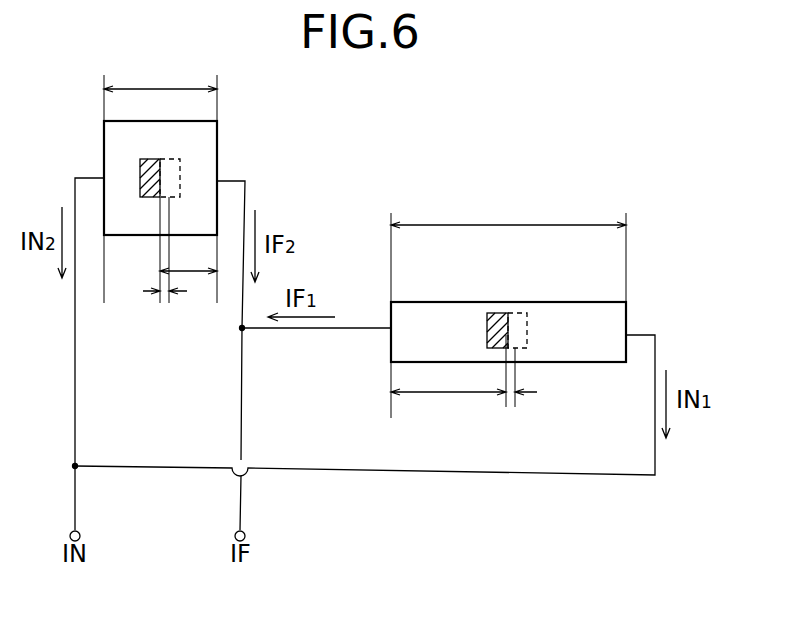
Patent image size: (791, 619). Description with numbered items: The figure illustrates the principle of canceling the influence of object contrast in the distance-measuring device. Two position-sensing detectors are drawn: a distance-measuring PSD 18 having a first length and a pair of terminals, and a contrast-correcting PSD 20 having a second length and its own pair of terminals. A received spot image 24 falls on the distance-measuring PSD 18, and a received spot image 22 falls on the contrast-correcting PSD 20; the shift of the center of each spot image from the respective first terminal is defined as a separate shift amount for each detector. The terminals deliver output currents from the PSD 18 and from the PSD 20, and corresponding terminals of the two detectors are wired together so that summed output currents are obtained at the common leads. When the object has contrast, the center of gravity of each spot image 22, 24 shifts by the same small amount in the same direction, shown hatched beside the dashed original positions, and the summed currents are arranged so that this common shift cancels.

The distance-measuring PSD 18 is at (563, 355).
The contrast-correcting PSD 20 is at (217, 195).
The received spot image 22 is at (180, 175).
The received spot image 24 is at (527, 313).